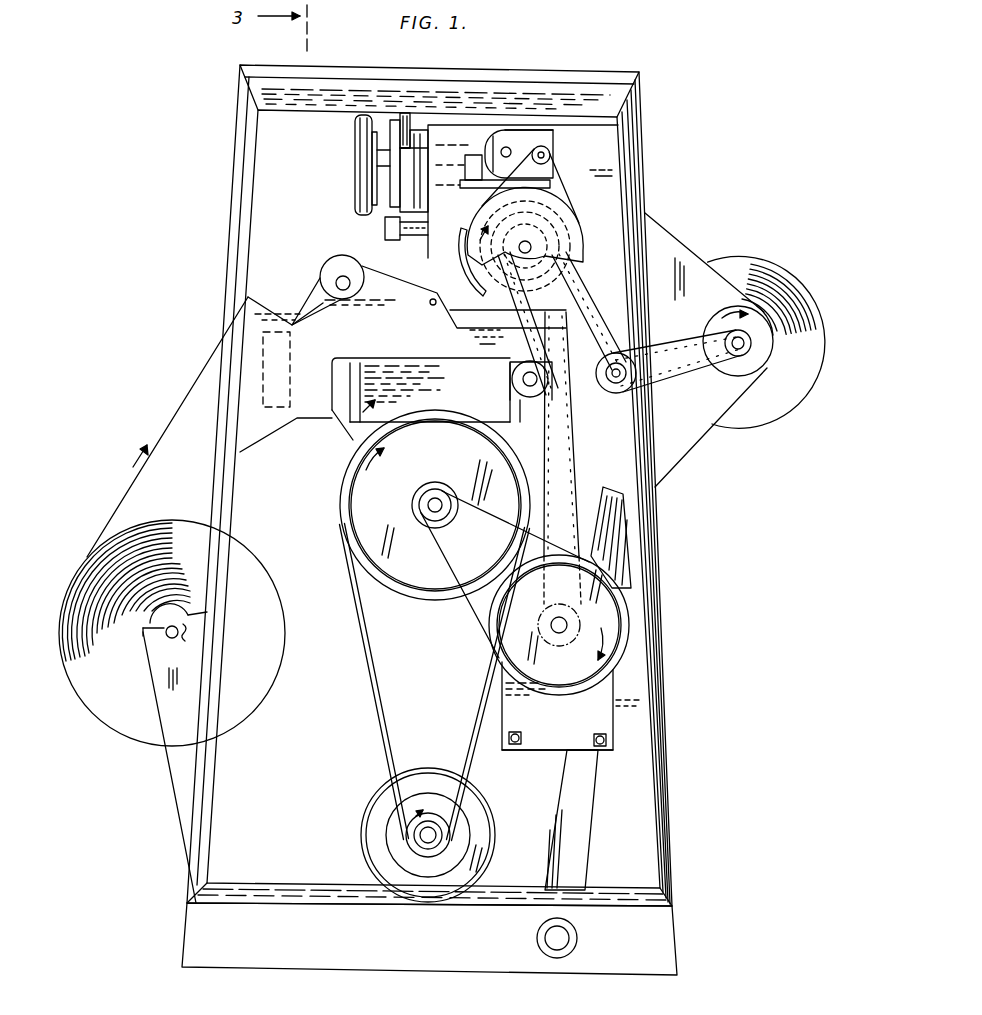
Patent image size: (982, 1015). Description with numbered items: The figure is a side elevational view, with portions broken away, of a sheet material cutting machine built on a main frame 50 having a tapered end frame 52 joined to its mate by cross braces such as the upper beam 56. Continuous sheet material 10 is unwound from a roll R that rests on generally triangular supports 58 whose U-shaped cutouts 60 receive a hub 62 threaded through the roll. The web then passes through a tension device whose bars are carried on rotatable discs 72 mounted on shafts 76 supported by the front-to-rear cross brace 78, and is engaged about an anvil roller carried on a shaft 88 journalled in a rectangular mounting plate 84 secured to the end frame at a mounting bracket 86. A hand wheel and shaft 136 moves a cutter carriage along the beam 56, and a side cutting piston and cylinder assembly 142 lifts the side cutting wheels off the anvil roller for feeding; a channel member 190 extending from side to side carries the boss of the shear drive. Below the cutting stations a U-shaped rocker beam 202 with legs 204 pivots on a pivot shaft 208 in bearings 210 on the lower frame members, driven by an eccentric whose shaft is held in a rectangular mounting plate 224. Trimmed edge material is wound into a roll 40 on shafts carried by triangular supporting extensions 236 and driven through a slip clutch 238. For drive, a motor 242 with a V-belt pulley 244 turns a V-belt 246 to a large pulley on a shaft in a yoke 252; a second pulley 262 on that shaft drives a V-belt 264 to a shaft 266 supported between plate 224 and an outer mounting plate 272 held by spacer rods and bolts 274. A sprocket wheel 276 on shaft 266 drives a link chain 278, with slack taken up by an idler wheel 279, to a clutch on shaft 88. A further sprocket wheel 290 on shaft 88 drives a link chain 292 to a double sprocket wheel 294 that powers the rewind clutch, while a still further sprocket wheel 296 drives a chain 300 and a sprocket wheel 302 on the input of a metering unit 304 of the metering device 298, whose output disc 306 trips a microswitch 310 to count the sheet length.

The sheet material 10 is at (122, 499).
The roll 40 is at (766, 270).
The main frame 50 is at (668, 770).
The end frame 52 is at (661, 808).
The cross brace 56 is at (420, 130).
The triangular supports 58 is at (168, 696).
The U-shaped cutouts 60 is at (177, 640).
The hub 62 is at (143, 634).
The rotatable discs 72 is at (330, 275).
The shafts 76 is at (343, 290).
The front-to-rear cross brace 78 is at (390, 329).
The rectangular mounting plate 84 is at (428, 260).
The mounting bracket 86 is at (403, 114).
The shaft 88 is at (533, 236).
The hand wheel and shaft 136 is at (355, 138).
The side cutting piston and cylinder assembly 142 is at (384, 228).
The channel member 190 is at (288, 410).
The rocker beam 202 is at (578, 846).
The legs 204 is at (627, 557).
The pivot shaft 208 is at (570, 940).
The bearings 210 is at (537, 938).
The rectangular mounting plate 224 is at (634, 740).
The triangular supporting extensions 236 is at (690, 252).
The slip clutch 238 is at (767, 373).
The motor 242 is at (370, 823).
The V-belt pulley 244 is at (433, 824).
The V-belt 246 is at (690, 341).
The yoke 252 is at (346, 431).
The second pulley 262 is at (435, 496).
The V-belt 264 is at (462, 572).
The shaft 266 is at (560, 638).
The mounting plate 272 is at (502, 730).
The spacer rods and bolts 274 is at (596, 747).
The sprocket wheel 276 is at (560, 612).
The link chain 278 is at (576, 475).
The idler wheel 279 is at (512, 377).
The sprocket wheel 290 is at (500, 258).
The link chain 292 is at (590, 292).
The double sprocket wheel 294 is at (636, 386).
The sprocket wheel 296 is at (492, 208).
The metering device 298 is at (510, 145).
The chain 300 is at (560, 213).
The sprocket wheel 302 is at (553, 156).
The metering unit 304 is at (545, 130).
The disc 306 is at (506, 128).
The microswitch 310 is at (471, 155).
The roll R is at (93, 692).